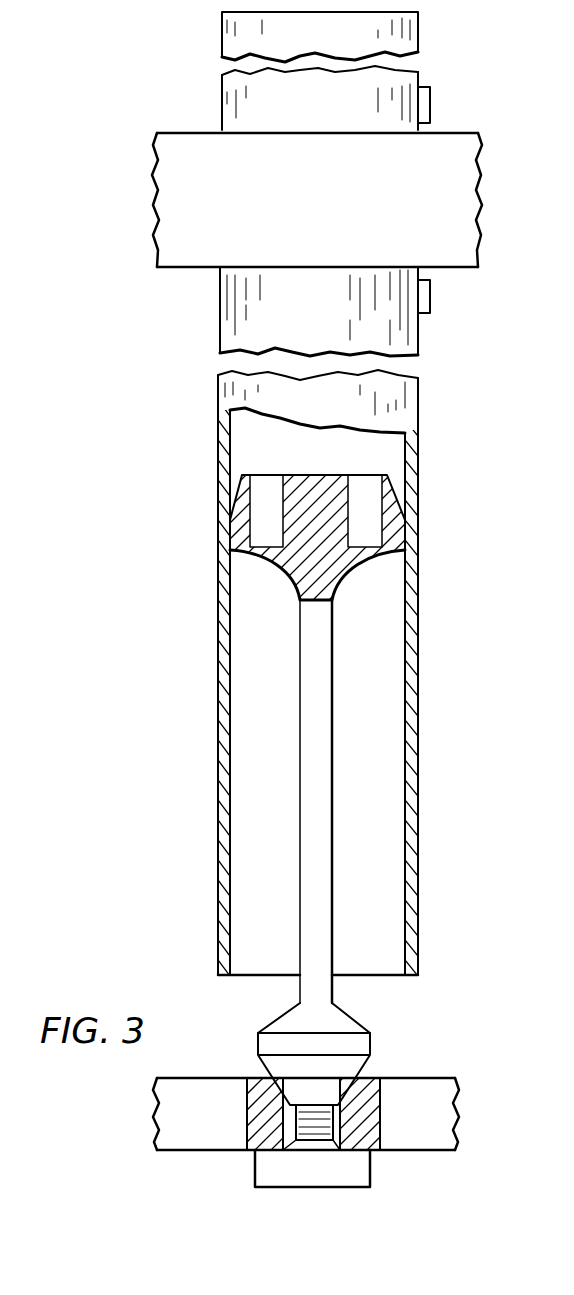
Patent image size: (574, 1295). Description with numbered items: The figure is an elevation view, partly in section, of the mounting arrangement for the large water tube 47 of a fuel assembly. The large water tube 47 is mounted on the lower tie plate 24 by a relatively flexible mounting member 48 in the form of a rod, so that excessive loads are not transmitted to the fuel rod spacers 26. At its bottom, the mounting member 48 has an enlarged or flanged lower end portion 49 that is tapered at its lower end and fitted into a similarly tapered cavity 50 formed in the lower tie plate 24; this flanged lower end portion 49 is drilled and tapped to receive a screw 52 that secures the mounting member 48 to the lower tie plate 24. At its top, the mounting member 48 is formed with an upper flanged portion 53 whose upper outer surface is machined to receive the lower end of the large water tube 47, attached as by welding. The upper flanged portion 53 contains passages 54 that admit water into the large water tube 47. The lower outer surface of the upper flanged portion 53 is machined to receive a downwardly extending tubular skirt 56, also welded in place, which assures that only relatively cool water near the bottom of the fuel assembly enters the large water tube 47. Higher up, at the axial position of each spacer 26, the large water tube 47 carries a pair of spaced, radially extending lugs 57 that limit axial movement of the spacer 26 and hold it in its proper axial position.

The lower tie plate 24 is at (455, 1120).
The fuel rod spacer 26 is at (478, 190).
The large water tube 47 is at (418, 393).
The mounting member 48 is at (332, 758).
The flanged lower end portion 49 is at (370, 1045).
The tapered cavity 50 is at (287, 1140).
The screw 52 is at (350, 1188).
The upper flanged portion 53 is at (319, 552).
The passages 54 is at (358, 557).
The tubular skirt 56 is at (418, 823).
The lugs 57 is at (430, 100).